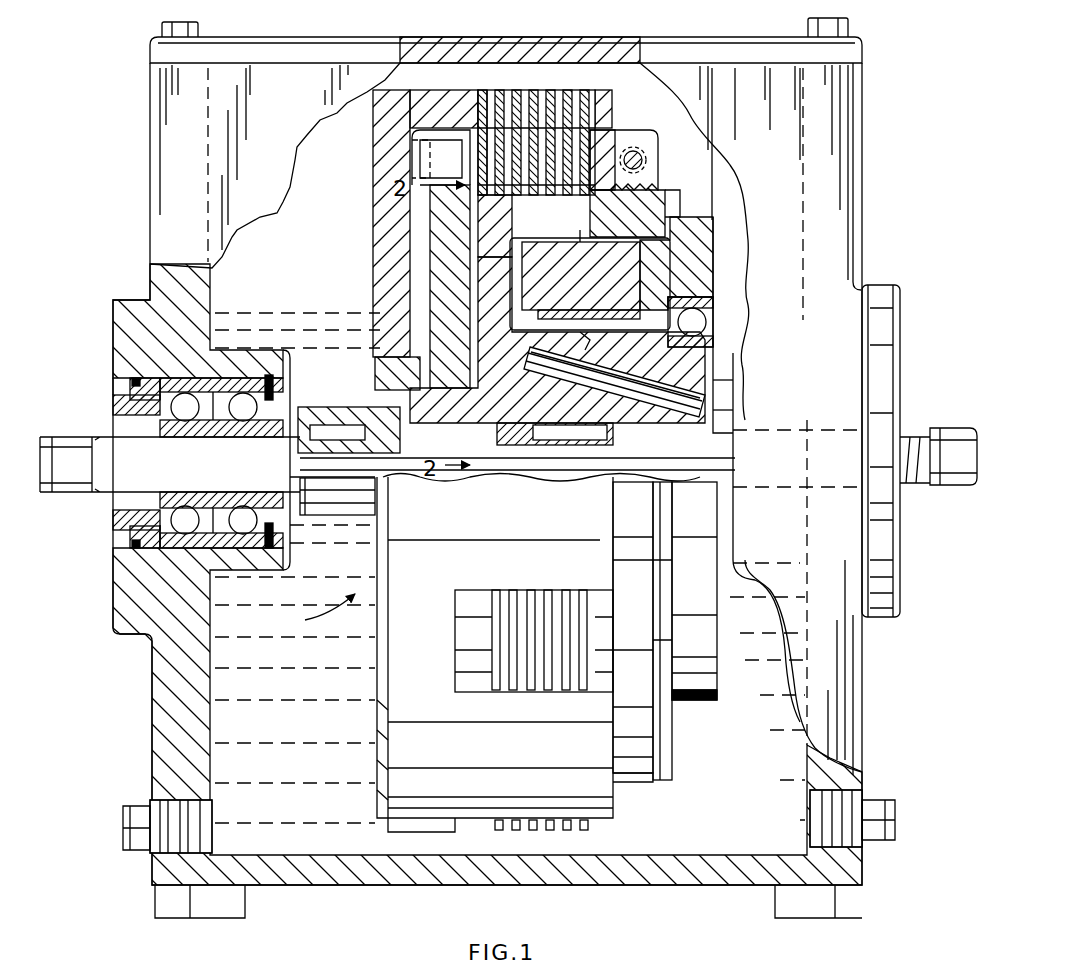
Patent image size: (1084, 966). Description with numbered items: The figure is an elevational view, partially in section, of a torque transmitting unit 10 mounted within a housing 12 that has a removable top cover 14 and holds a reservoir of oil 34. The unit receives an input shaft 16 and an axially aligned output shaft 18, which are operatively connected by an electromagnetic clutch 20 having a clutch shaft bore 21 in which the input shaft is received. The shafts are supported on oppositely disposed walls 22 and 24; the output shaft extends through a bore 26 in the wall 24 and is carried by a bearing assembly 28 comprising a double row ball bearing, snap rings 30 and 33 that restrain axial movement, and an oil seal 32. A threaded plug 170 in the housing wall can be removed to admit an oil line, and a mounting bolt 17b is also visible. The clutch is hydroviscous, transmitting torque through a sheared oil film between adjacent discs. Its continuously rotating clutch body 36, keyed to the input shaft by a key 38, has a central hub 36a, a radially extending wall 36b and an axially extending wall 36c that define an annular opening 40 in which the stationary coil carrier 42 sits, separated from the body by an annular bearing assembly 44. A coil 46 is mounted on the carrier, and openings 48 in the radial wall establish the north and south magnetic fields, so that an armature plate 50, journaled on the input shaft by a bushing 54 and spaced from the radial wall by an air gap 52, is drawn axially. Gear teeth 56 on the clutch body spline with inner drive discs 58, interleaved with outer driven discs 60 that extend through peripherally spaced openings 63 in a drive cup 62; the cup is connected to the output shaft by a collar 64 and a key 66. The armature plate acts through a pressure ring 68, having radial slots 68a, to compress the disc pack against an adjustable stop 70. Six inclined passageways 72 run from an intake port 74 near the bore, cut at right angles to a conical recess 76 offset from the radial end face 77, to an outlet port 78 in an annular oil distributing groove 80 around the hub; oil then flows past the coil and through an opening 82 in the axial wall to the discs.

The torque transmitting unit 10 is at (316, 612).
The housing 12 is at (868, 245).
The removable top cover 14 is at (625, 50).
The input shaft 16 is at (950, 470).
The mounting bolt 17b is at (165, 852).
The output shaft 18 is at (66, 492).
The electromagnetic clutch 20 is at (400, 745).
The clutch shaft bore 21 is at (512, 435).
The wall 22 is at (845, 772).
The wall 24 is at (180, 270).
The bore 26 is at (116, 386).
The bearing assembly 28 is at (190, 365).
The snap ring 30 is at (133, 550).
The oil seal 32 is at (118, 405).
The snap ring 33 is at (172, 438).
The reservoir of oil 34 is at (298, 310).
The clutch body 36 is at (713, 345).
The central hub 36a is at (594, 418).
The radially extending wall 36b is at (495, 225).
The axially extending wall 36c is at (665, 195).
The key 38 is at (570, 437).
The annular opening 40 is at (660, 225).
The coil carrier 42 is at (705, 258).
The annular bearing assembly 44 is at (705, 300).
The coil 46 is at (612, 300).
The openings 48 is at (450, 290).
The armature plate 50 is at (430, 218).
The air gap 52 is at (455, 322).
The bushing 54 is at (457, 410).
The gear teeth 56 is at (585, 205).
The inner drive discs 58 is at (570, 185).
The outer driven discs 60 is at (572, 190).
The drive cup 62 is at (400, 152).
The openings 63 is at (487, 130).
The collar 64 is at (405, 366).
The key 66 is at (355, 425).
The pressure ring 68 is at (452, 180).
The slots 68a is at (412, 140).
The adjustable stop 70 is at (648, 145).
The passageways 72 is at (628, 380).
The intake port 74 is at (720, 387).
The conical recess 76 is at (720, 415).
The radial end face 77 is at (715, 525).
The outlet port 78 is at (632, 364).
The annular oil distributing groove 80 is at (590, 340).
The opening 82 is at (581, 276).
The threaded plug 170 is at (863, 807).